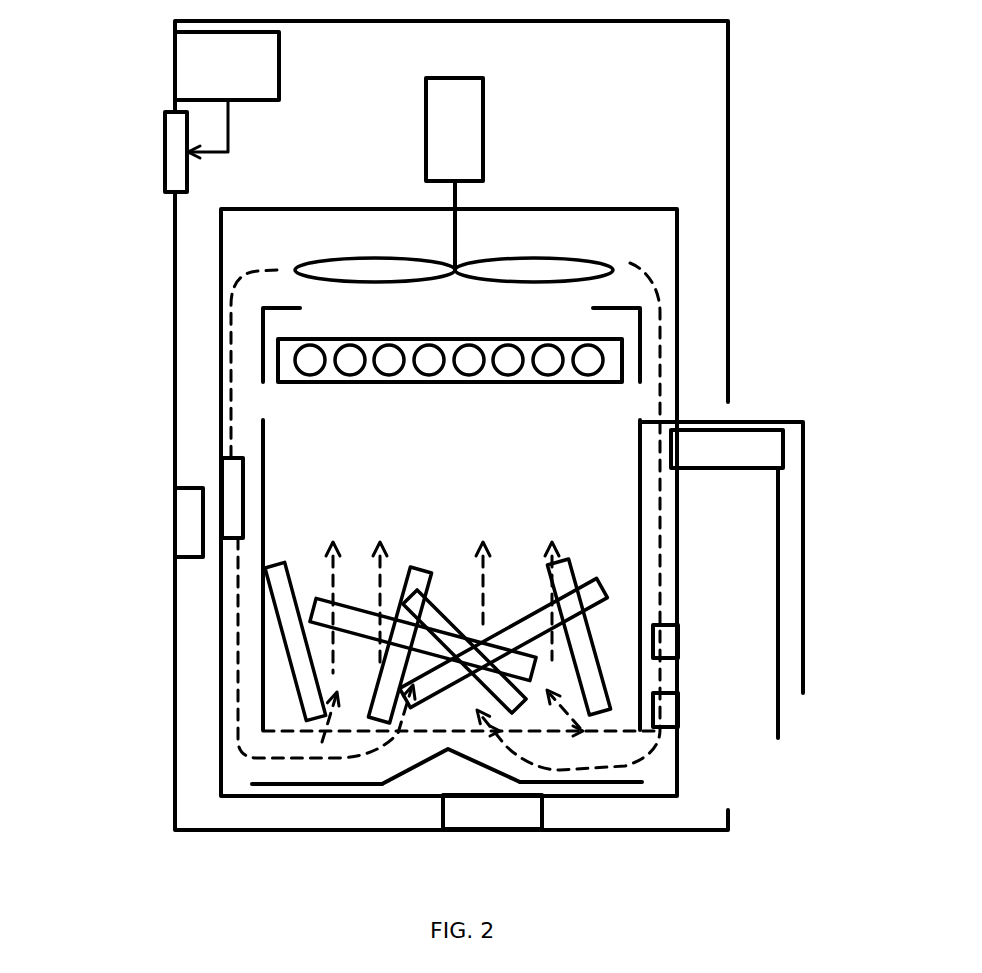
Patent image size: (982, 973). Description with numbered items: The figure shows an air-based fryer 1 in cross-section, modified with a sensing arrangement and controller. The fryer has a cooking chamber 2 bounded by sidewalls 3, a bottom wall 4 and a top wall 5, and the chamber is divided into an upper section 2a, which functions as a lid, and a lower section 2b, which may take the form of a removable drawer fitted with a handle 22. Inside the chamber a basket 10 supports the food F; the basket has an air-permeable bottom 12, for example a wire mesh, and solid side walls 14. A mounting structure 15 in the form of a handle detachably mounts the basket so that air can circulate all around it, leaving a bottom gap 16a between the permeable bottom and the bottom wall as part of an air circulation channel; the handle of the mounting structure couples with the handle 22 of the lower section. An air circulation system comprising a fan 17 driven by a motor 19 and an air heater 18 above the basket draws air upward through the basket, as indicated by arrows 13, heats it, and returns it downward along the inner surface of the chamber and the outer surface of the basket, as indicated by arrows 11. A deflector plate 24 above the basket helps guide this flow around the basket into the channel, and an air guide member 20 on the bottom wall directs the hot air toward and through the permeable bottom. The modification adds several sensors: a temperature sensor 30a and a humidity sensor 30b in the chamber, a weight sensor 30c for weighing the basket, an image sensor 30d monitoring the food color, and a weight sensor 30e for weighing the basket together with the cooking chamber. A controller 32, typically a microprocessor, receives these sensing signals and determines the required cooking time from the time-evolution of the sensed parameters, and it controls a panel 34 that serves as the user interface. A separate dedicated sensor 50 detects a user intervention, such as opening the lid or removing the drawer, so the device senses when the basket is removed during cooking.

The air-based fryer 1 is at (138, 82).
The cooking chamber 2 is at (250, 228).
The upper section 2a is at (220, 364).
The lower section 2b is at (221, 680).
The sidewalls 3 is at (263, 610).
The bottom wall 4 is at (278, 797).
The top wall 5 is at (322, 209).
The basket 10 is at (285, 521).
The arrows 11 is at (231, 310).
The air-permeable bottom 12 is at (613, 732).
The arrows 13 is at (480, 588).
The side walls 14 is at (640, 475).
The mounting structure 15 is at (803, 422).
The bottom gap 16a is at (232, 766).
The fan 17 is at (595, 262).
The air heater 18 is at (622, 357).
The motor 19 is at (483, 123).
The air guide member 20 is at (400, 775).
The handle 22 is at (780, 528).
The deflector plate 24 is at (262, 362).
The temperature sensor 30a is at (678, 637).
The humidity sensor 30b is at (678, 708).
The weight sensor 30c is at (720, 455).
The image sensor 30d is at (222, 466).
The weight sensor 30e is at (542, 822).
The controller 32 is at (279, 80).
The panel 34 is at (163, 150).
The sensor 50 is at (178, 533).
The food F is at (427, 550).